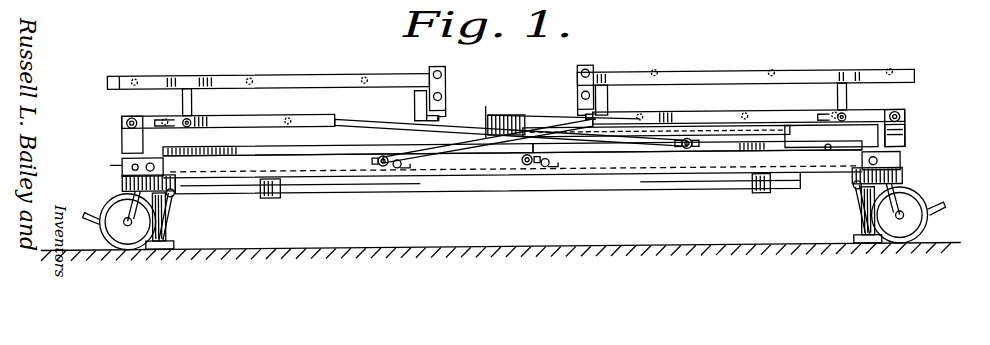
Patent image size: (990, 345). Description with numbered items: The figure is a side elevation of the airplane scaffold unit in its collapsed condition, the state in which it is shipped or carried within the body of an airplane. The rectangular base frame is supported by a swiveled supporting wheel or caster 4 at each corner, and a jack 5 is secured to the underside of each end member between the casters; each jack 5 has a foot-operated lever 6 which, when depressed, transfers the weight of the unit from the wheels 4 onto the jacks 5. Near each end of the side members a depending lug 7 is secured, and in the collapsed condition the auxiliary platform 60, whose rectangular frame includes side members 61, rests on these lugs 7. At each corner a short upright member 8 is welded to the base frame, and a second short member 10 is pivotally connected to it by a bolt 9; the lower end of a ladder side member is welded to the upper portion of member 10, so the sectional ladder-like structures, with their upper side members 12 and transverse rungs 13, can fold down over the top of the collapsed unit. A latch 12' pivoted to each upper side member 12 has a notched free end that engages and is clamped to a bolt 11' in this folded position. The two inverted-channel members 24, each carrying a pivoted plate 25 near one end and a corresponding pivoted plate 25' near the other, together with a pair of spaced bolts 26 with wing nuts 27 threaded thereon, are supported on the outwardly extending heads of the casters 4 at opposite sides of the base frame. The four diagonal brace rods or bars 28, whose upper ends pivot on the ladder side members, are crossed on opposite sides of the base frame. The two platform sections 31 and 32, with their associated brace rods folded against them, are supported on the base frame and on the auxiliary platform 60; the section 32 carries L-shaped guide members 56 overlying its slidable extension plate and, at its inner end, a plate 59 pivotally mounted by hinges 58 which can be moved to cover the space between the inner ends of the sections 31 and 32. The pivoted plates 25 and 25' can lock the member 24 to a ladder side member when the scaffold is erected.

The supporting wheel or caster 4 is at (122, 189).
The jack 5 is at (165, 222).
The foot-operated lever 6 is at (84, 212).
The depending lug 7 is at (260, 188).
The upright member 8 is at (905, 136).
The bolt 9 is at (122, 118).
The second relatively short member 10 is at (182, 109).
The bolt 11' is at (500, 126).
The upper parallel side member 12 is at (510, 65).
The latch 12' is at (512, 105).
The rung 13 is at (140, 74).
The member 24 is at (286, 186).
The pivoted plate 25 is at (907, 151).
The end box 25' is at (118, 154).
The bolt 26 is at (383, 167).
The wing nut 27 is at (399, 169).
The diagonally-extending brace rod or bar 28 is at (446, 118).
The platform section 31 is at (293, 139).
The platform section 32 is at (716, 156).
The L-shaped guide member 56 is at (831, 138).
The hinge 58 is at (486, 110).
The plate 59 is at (510, 118).
The auxiliary platform 60 is at (647, 183).
The side member 61 is at (492, 183).